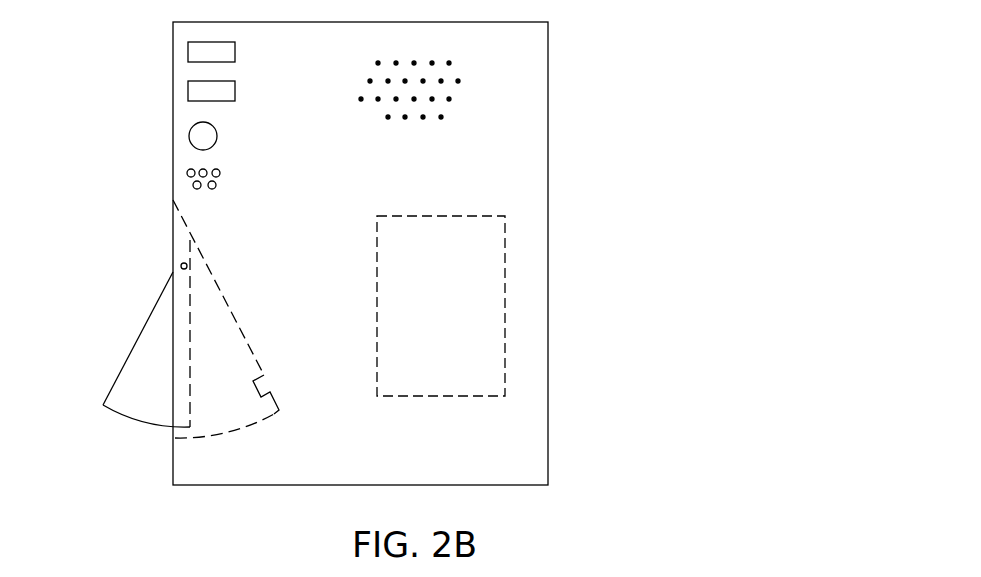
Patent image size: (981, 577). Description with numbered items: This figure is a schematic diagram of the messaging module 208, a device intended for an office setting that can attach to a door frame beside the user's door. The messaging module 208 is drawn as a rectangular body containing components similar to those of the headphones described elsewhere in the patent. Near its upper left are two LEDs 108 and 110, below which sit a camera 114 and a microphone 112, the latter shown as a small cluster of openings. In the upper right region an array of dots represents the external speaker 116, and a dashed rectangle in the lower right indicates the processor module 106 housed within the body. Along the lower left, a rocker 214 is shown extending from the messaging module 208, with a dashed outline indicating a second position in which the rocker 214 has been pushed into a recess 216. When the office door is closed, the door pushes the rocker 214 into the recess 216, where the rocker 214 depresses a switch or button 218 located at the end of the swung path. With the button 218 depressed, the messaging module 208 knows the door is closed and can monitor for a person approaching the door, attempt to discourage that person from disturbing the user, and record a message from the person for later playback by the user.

The messaging module 208 is at (562, 48).
The LED 108 is at (235, 52).
The LED 110 is at (235, 89).
The camera 114 is at (217, 135).
The microphone 112 is at (225, 183).
The external speaker 116 is at (460, 102).
The processor module 106 is at (490, 247).
The rocker 214 is at (140, 367).
The recess 216 is at (225, 410).
The switch or button 218 is at (262, 383).